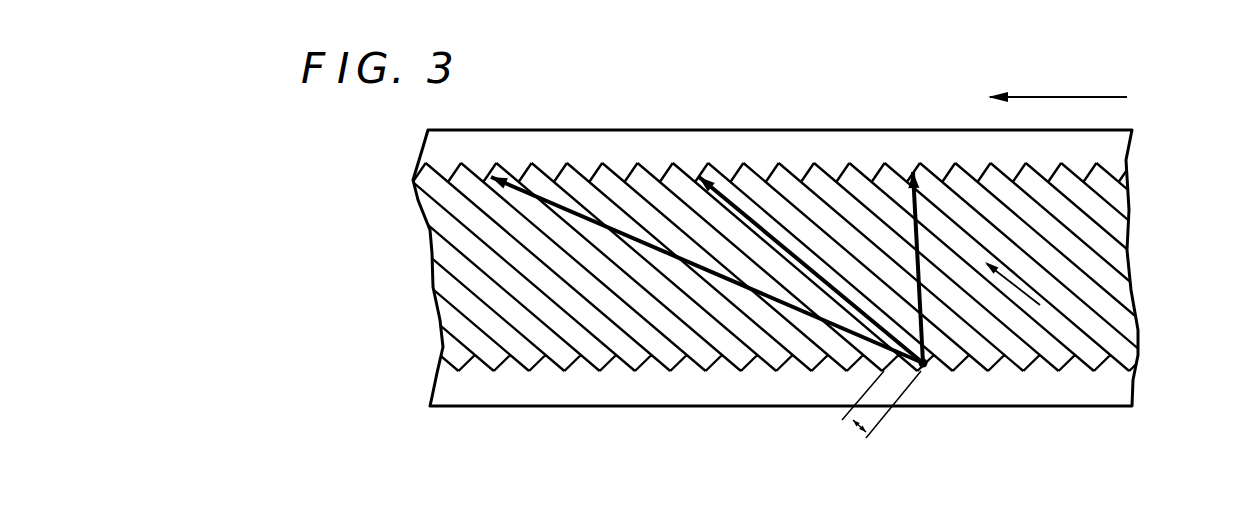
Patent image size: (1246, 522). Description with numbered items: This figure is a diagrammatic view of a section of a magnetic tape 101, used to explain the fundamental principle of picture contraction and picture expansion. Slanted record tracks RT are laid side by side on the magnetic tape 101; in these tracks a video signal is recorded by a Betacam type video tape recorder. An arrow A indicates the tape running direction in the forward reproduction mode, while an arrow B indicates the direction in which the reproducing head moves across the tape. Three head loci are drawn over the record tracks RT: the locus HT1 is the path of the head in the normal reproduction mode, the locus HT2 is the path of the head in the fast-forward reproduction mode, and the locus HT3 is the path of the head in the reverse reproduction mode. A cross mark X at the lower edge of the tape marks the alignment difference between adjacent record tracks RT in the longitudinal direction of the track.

The magnetic tape 101 is at (1017, 390).
The record tracks RT is at (1060, 262).
The locus of the head in the normal reproduction mode HT1 is at (749, 213).
The locus of the head in the fast-forward reproduction mode HT2 is at (917, 243).
The locus of the head in the reverse reproduction mode HT3 is at (565, 208).
The tape running direction A is at (1067, 99).
The direction of reproducing head movement B is at (1021, 296).
The alignment difference between adjacent record tracks X is at (881, 410).